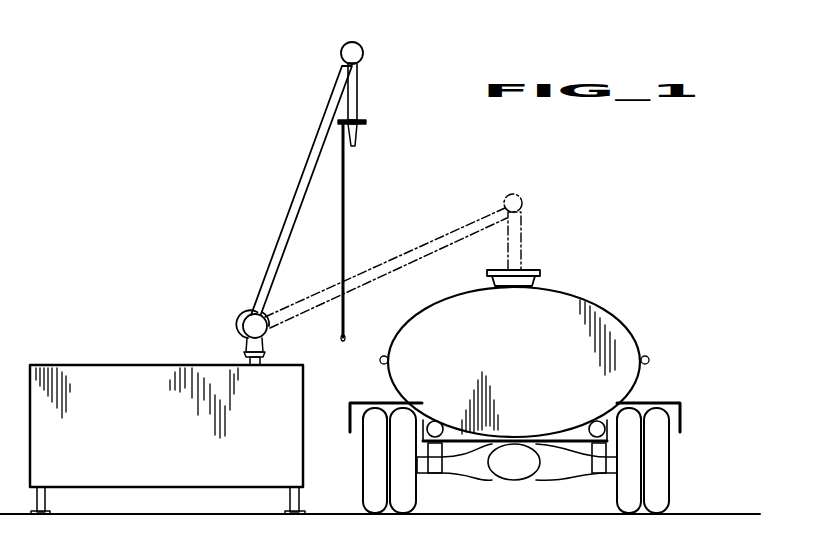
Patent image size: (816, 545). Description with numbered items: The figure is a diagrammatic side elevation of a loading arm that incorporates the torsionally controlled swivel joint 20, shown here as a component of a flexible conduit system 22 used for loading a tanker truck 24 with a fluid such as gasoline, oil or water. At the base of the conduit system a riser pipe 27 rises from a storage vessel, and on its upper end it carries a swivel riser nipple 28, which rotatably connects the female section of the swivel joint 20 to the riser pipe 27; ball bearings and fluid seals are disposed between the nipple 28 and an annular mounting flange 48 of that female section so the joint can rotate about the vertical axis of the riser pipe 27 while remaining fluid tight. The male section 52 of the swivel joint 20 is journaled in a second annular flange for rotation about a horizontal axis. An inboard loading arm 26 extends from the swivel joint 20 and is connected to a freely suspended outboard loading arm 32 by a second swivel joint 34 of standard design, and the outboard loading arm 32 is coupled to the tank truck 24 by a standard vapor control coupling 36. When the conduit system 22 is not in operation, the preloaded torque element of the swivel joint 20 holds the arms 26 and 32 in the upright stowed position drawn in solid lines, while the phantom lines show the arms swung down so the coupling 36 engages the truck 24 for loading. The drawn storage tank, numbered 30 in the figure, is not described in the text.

The torsionally controlled swivel joint 20 is at (243, 328).
The flexible conduit system 22 is at (327, 104).
The tanker truck 24 is at (524, 355).
The inboard loading arm 26 is at (311, 155).
The riser pipe 27 is at (263, 360).
The swivel riser nipple 28 is at (245, 354).
The storage tank / box 30 is at (167, 439).
The outboard loading arm 32 is at (360, 101).
The second swivel joint 34 is at (363, 57).
The vapor control coupling 36 is at (366, 131).
The annular mounting flange 48 is at (262, 343).
The male section 52 is at (247, 316).